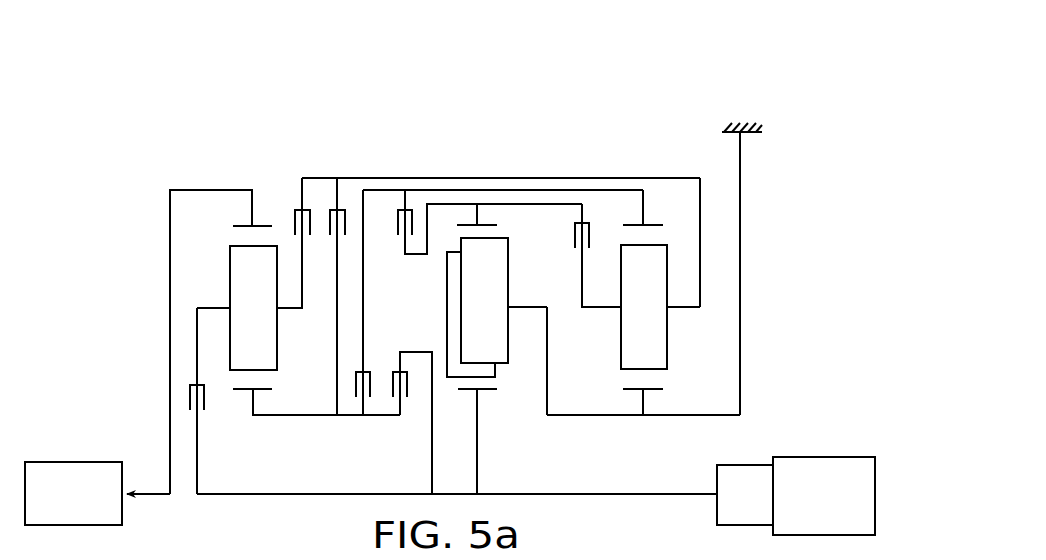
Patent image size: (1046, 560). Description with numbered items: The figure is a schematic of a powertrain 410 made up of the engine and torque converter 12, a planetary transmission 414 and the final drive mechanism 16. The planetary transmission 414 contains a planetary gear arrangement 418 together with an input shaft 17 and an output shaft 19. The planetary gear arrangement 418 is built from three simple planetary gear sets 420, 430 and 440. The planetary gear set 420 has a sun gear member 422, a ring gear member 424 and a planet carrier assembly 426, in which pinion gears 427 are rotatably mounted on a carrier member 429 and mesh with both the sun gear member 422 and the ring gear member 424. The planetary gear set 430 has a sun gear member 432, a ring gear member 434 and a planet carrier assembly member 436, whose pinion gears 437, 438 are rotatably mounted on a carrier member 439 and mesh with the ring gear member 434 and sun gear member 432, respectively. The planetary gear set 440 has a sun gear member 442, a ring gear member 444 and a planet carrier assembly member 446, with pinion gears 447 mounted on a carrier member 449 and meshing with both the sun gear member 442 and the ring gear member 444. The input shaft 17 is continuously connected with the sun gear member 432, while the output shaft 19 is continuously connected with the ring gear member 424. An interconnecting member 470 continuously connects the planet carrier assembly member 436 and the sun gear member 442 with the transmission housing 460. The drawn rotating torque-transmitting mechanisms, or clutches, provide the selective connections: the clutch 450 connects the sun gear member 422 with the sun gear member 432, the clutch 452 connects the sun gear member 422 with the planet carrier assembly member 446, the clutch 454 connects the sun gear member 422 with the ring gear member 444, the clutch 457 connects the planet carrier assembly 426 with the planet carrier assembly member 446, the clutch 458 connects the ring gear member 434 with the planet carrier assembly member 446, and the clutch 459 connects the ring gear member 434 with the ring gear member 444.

The powertrain 410 is at (131, 190).
The planetary transmission 414 is at (478, 145).
The planetary gear arrangement 418 is at (534, 145).
The ring gear member 424 is at (243, 222).
The clutch 457 is at (287, 205).
The clutch 452 is at (328, 205).
The clutch 459 is at (392, 205).
The ring gear member 434 is at (470, 221).
The clutch 458 is at (570, 215).
The ring gear member 444 is at (632, 222).
The transmission housing 460 is at (726, 128).
The planet carrier assembly 426 is at (218, 300).
The carrier member 429 is at (212, 306).
The pinion gears 427 is at (240, 298).
The pinion gears 437 is at (470, 296).
The pinion gears 447 is at (631, 298).
The pinion gears 438 is at (445, 322).
The planet carrier assembly member 436 is at (518, 300).
The carrier member 439 is at (532, 306).
The carrier member 449 is at (695, 312).
The planet carrier assembly member 446 is at (679, 317).
The clutch 450 is at (185, 380).
The planetary gear set 420 is at (242, 393).
The sun gear member 422 is at (265, 393).
The clutch 454 is at (353, 404).
The planetary gear set 430 is at (466, 393).
The sun gear member 432 is at (487, 393).
The interconnecting member 470 is at (557, 418).
The planetary gear set 440 is at (637, 393).
The sun gear member 442 is at (655, 393).
The final drive mechanism 16 is at (88, 448).
The output shaft 19 is at (155, 497).
The input shaft 17 is at (690, 498).
The engine and torque converter 12 is at (806, 438).